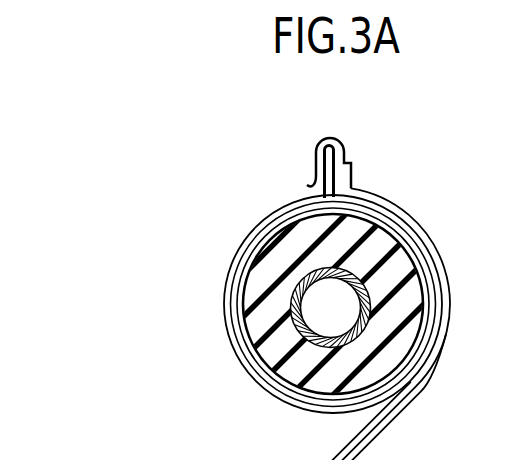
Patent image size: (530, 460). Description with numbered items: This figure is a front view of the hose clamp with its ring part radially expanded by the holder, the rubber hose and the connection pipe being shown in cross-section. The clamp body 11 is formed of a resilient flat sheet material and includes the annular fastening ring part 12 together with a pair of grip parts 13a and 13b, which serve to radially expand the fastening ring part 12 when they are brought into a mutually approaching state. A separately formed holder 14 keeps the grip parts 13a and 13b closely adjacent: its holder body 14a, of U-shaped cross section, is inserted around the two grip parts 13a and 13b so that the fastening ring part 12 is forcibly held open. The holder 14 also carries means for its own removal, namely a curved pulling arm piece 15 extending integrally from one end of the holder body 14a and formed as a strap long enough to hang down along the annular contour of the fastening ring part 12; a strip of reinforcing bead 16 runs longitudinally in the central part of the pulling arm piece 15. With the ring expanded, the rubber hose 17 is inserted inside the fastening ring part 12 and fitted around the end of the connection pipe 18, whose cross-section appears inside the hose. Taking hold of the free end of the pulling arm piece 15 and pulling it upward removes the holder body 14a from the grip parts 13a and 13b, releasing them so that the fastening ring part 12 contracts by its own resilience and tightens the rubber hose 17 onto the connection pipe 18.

The clamp body 11 is at (218, 212).
The fastening ring part 12 is at (242, 371).
The grip part 13a is at (316, 165).
The grip part 13b is at (349, 160).
The holder 14 is at (492, 192).
The holder body 14a is at (329, 142).
The pulling arm piece 15 is at (435, 320).
The reinforcing bead 16 is at (440, 267).
The rubber hose 17 is at (253, 319).
The connection pipe 18 is at (296, 297).